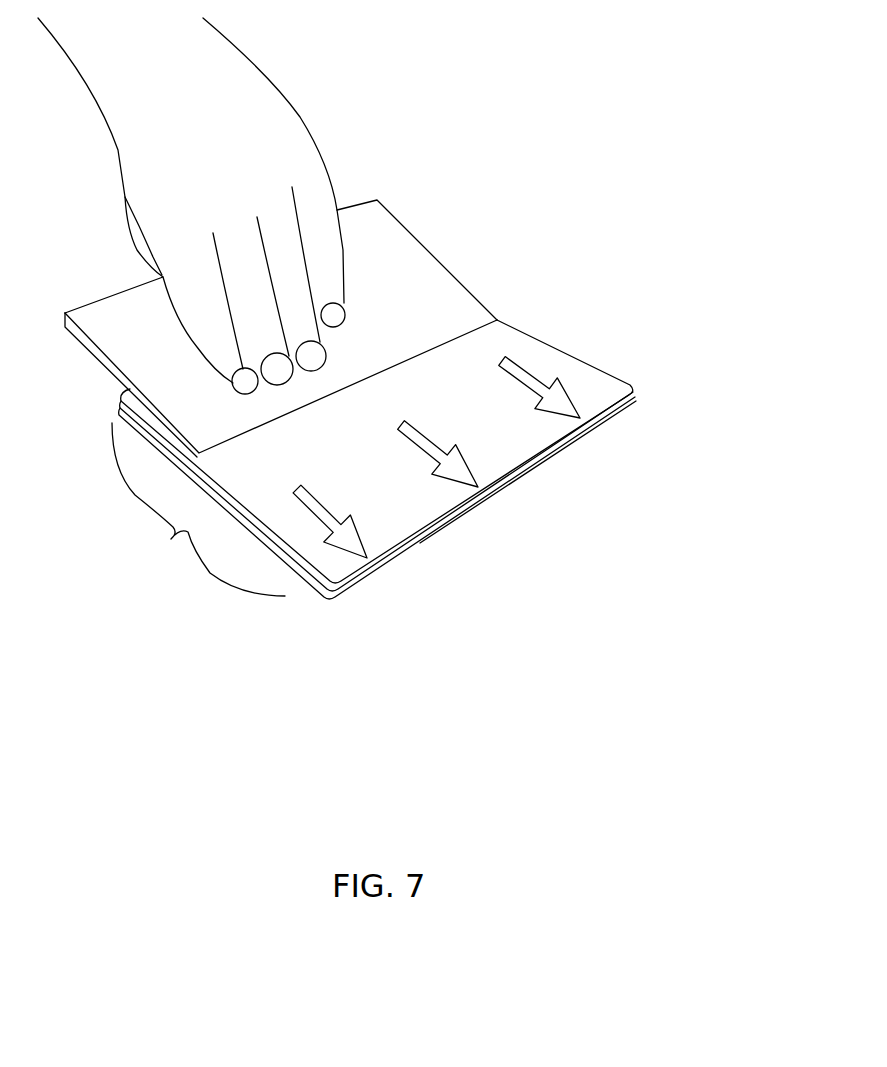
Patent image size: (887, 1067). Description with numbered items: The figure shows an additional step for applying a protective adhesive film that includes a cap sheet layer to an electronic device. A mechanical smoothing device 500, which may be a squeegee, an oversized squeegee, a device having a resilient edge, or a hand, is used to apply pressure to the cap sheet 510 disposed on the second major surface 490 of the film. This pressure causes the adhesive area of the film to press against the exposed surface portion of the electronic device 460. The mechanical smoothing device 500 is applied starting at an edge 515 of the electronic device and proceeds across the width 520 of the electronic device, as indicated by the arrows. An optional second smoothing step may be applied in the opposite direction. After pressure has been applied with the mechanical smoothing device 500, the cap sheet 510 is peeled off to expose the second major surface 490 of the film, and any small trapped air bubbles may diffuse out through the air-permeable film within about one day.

The mechanical smoothing device 500 is at (393, 277).
The electronic device 460 is at (570, 430).
The second major surface 490 is at (505, 475).
The cap sheet 510 is at (417, 510).
The edge 515 is at (377, 558).
The width 520 is at (198, 509).